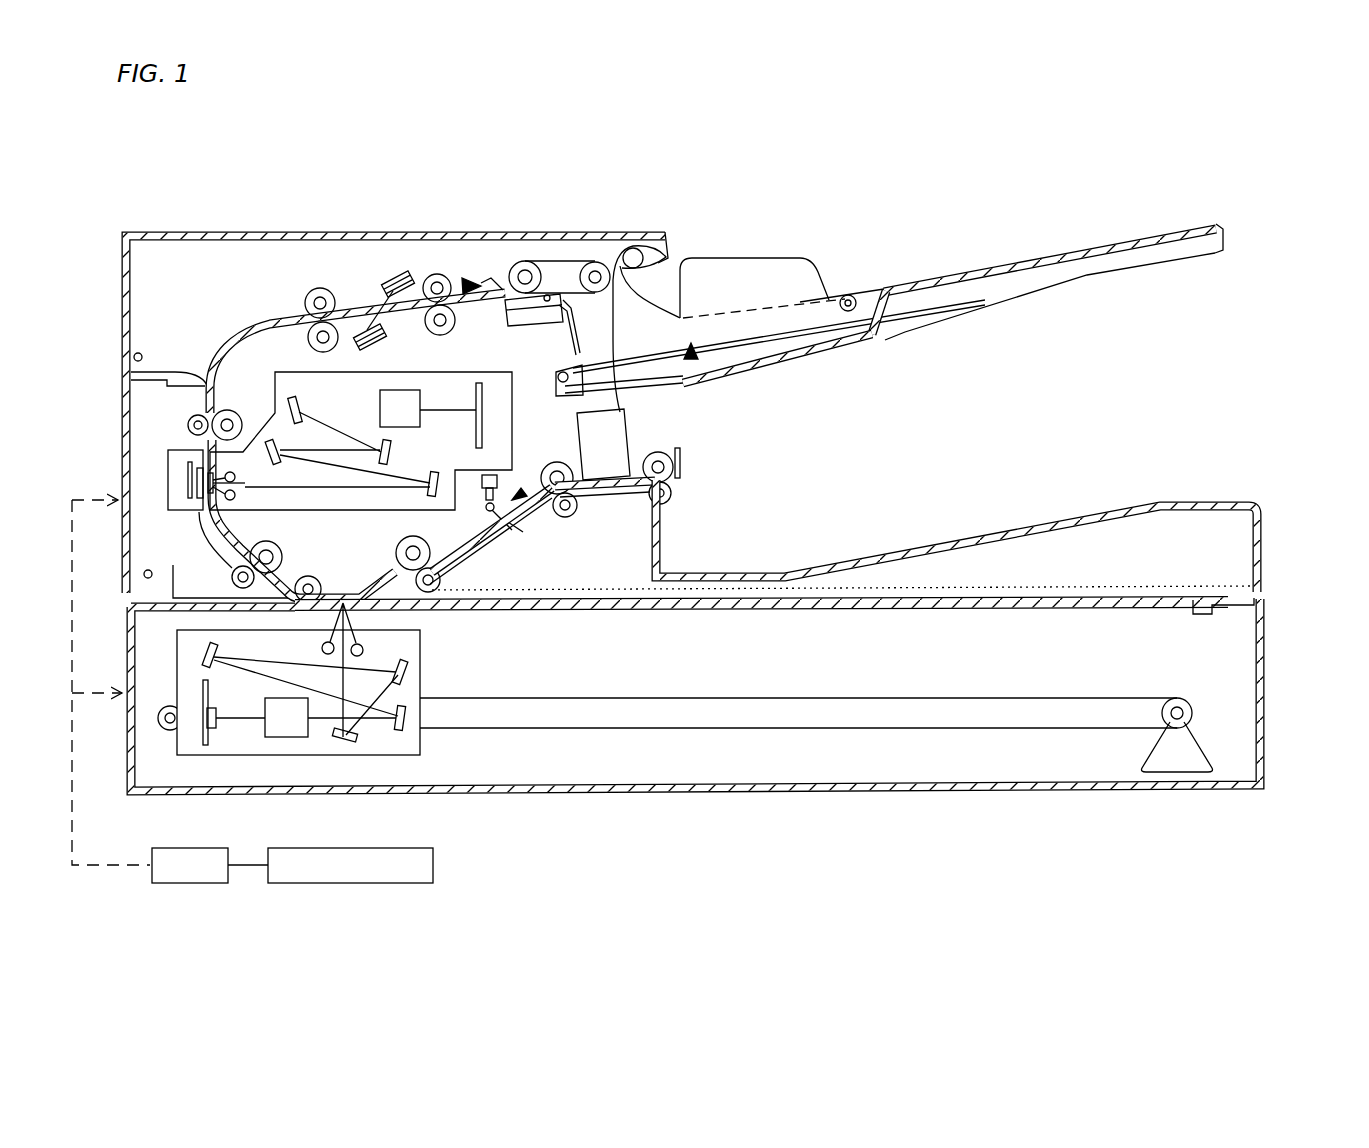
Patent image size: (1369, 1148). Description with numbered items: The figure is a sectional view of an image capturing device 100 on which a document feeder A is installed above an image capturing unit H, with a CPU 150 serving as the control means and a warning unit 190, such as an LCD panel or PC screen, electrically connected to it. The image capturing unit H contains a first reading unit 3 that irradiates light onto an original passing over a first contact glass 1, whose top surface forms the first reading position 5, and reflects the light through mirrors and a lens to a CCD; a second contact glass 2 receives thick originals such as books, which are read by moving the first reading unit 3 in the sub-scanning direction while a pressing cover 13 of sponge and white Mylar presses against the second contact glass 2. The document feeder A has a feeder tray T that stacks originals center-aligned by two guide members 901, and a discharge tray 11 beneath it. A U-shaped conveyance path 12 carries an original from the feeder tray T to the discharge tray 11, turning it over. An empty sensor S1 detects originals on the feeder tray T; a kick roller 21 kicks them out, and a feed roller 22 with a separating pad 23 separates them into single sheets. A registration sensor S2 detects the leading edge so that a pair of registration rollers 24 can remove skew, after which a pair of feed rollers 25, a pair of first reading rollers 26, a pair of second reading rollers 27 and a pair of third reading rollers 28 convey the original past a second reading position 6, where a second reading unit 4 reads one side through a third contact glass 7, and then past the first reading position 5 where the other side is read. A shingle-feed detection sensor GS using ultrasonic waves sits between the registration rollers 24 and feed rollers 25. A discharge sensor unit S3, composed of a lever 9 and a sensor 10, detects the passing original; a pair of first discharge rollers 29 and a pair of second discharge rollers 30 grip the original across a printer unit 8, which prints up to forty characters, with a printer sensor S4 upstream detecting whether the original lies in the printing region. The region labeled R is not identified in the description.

The image capturing device 100 is at (936, 205).
The document feeder A is at (1122, 386).
The image capturing unit H is at (1277, 660).
The feeder tray T is at (1036, 246).
The guide member 901 is at (751, 272).
The empty sensor S1 is at (692, 356).
The registration sensor S2 is at (462, 278).
The discharge sensor unit S3 is at (507, 545).
The printer sensor S4 is at (521, 491).
The shingle-feed detection sensor GS is at (362, 285).
The first contact glass 1 is at (370, 606).
The second contact glass 2 is at (681, 612).
The first reading unit 3 is at (421, 756).
The second reading unit 4 is at (456, 372).
The first reading position 5 is at (346, 584).
The second reading position 6 is at (181, 450).
The third contact glass 7 is at (236, 498).
The printer unit 8 is at (621, 426).
The lever 9 is at (521, 534).
The sensor 10 is at (488, 500).
The discharge tray 11 is at (918, 536).
The U-shaped conveyance path 12 is at (226, 336).
The pressing cover 13 is at (1160, 601).
The kick roller 21 is at (594, 262).
The feed roller 22 is at (516, 260).
The separating pad 23 is at (531, 314).
The pair of registration rollers 24 is at (432, 272).
The pair of feed rollers 25 is at (305, 294).
The pair of first reading rollers 26 is at (233, 410).
The pair of second reading rollers 27 is at (231, 578).
The pair of third reading rollers 28 is at (440, 590).
The pair of first discharge rollers 29 is at (566, 518).
The pair of second discharge rollers 30 is at (675, 498).
The reverse path R is at (611, 491).
The CPU 150 is at (190, 848).
The warning unit 190 is at (434, 866).